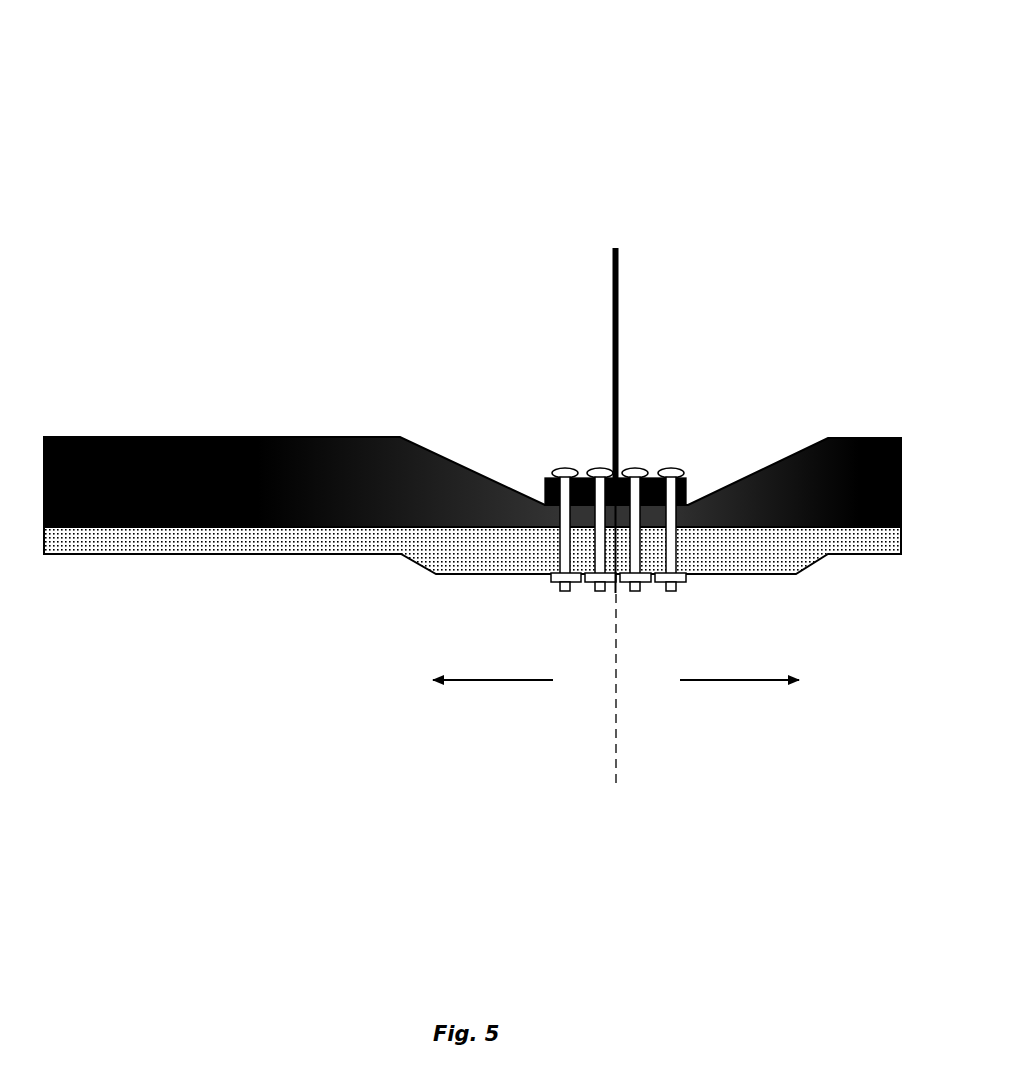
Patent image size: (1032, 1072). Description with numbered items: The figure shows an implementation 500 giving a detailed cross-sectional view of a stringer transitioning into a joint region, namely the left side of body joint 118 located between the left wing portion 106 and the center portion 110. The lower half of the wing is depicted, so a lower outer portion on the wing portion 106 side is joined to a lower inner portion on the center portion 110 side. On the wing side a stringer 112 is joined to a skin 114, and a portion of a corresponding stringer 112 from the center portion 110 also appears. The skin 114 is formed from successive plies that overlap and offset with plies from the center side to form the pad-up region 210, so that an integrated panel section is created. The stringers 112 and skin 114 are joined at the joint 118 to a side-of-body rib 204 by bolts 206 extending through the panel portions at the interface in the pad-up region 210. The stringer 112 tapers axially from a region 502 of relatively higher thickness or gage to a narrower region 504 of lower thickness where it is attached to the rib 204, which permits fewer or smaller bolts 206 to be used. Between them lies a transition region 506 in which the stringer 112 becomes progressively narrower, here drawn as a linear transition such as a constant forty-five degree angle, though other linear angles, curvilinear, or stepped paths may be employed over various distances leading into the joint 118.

The implementation 500 is at (141, 60).
The region of relatively higher thickness 502 is at (154, 428).
The stringer 112 is at (232, 392).
The transition region 506 is at (457, 490).
The narrower region 504 is at (545, 512).
The side-of-body rib 204 is at (610, 398).
The bolts 206 is at (624, 438).
The skin 114 is at (355, 547).
The pad-up region 210 is at (500, 565).
The wing portion 106 is at (517, 681).
The center portion 110 is at (716, 681).
The side of body joint 118 is at (607, 725).